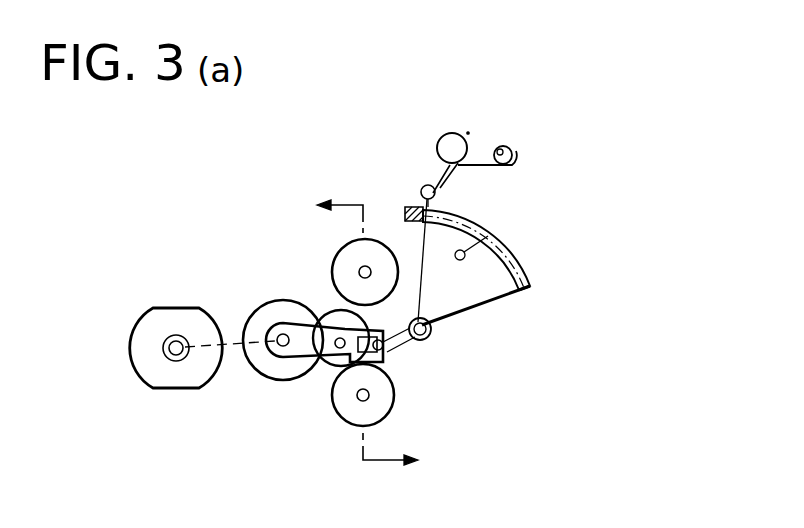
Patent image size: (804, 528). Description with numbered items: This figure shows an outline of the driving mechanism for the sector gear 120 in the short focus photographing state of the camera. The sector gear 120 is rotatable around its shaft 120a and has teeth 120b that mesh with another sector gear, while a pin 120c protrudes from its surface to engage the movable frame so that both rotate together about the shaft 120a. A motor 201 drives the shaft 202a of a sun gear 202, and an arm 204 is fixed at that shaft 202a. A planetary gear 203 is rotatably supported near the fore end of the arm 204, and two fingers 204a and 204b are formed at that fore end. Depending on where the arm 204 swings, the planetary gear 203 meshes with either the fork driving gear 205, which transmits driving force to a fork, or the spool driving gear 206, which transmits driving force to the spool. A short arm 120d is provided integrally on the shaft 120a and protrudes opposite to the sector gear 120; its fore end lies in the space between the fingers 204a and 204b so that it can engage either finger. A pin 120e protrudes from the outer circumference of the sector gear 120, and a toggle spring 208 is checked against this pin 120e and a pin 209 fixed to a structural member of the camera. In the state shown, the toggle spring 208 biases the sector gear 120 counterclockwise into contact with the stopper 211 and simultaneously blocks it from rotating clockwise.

The sector gear 120 is at (480, 300).
The shaft 120a is at (432, 330).
The teeth 120b is at (531, 288).
The pin 120c is at (488, 235).
The short arm 120d is at (428, 340).
The pin 120e is at (436, 192).
The motor 201 is at (187, 372).
The sun gear 202 is at (264, 374).
The shaft 202a is at (278, 334).
The planetary gear 203 is at (330, 313).
The arm 204 is at (303, 358).
The finger 204a is at (400, 360).
The finger 204b is at (386, 364).
The fork driving gear 205 is at (334, 258).
The spool driving gear 206 is at (345, 414).
The toggle spring 208 is at (460, 135).
The pin 209 is at (510, 148).
The stopper 211 is at (406, 207).